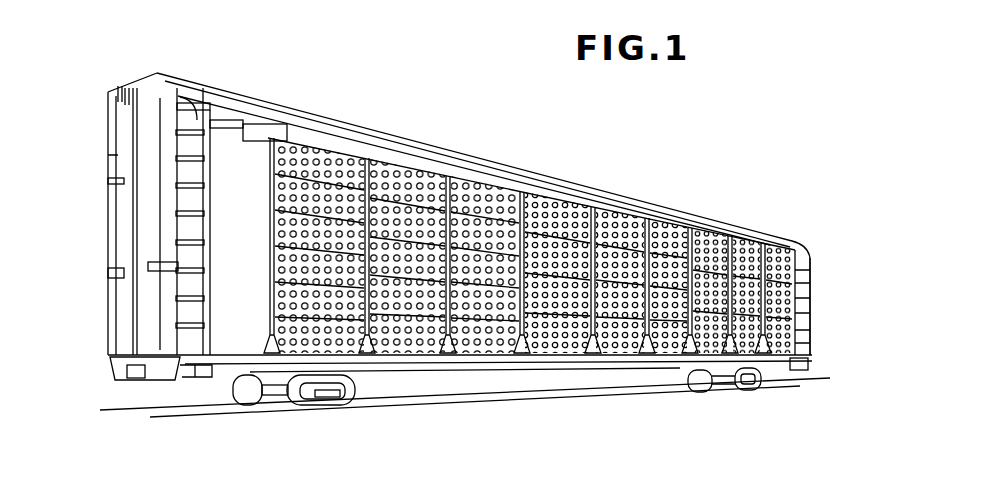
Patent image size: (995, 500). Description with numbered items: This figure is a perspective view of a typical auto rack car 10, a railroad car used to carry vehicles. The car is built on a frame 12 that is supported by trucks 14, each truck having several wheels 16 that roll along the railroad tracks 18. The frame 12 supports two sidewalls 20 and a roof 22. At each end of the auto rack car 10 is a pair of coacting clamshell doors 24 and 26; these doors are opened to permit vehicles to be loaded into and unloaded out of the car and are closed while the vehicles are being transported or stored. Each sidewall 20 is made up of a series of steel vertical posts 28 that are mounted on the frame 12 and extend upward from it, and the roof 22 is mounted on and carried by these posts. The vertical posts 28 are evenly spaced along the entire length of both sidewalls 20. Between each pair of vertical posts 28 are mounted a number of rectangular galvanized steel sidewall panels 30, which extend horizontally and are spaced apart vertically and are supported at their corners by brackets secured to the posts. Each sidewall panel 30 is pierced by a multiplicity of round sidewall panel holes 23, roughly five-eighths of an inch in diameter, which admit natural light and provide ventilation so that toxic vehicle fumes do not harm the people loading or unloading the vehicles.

The auto rack car 10 is at (645, 172).
The frame 12 is at (497, 364).
The trucks 14 is at (333, 405).
The wheels 16 is at (727, 387).
The railroad tracks 18 is at (603, 394).
The sidewalls 20 is at (342, 158).
The roof 22 is at (526, 170).
The sidewall panel holes 23 is at (323, 142).
The clamshell door 24 is at (139, 229).
The clamshell door 26 is at (118, 212).
The vertical posts 28 is at (452, 160).
The sidewall panels 30 is at (412, 287).